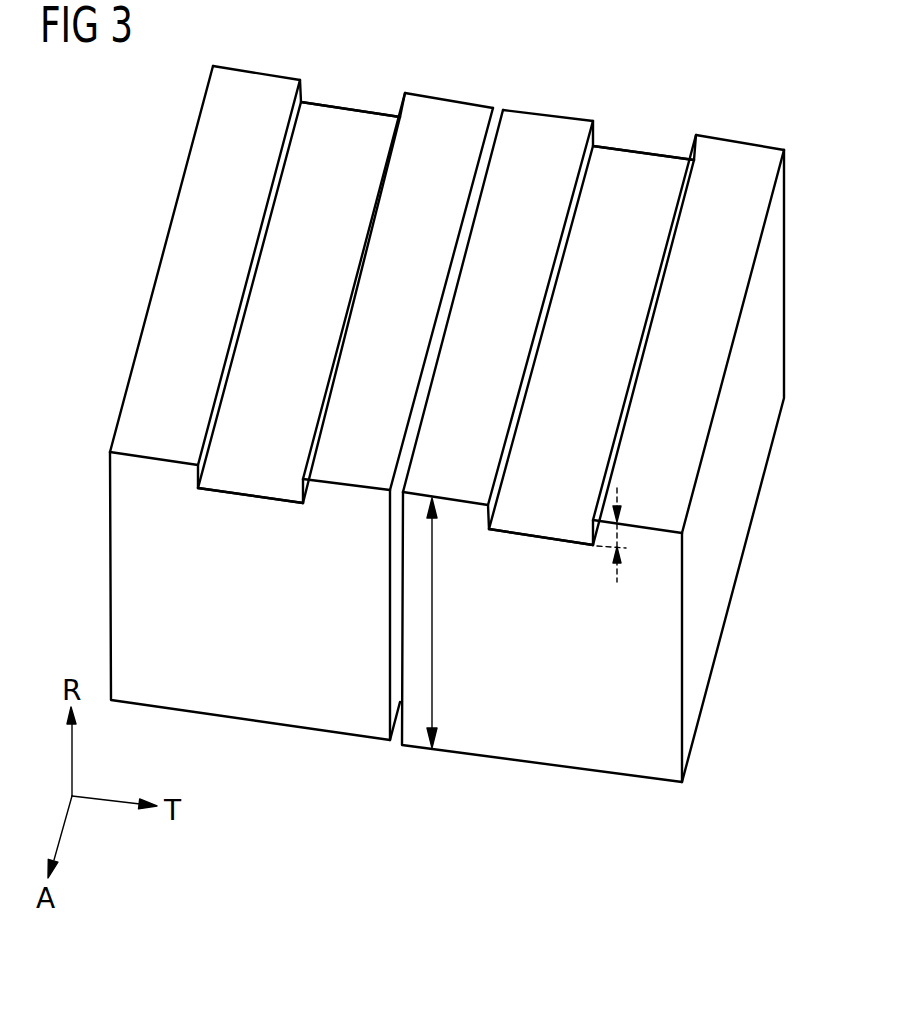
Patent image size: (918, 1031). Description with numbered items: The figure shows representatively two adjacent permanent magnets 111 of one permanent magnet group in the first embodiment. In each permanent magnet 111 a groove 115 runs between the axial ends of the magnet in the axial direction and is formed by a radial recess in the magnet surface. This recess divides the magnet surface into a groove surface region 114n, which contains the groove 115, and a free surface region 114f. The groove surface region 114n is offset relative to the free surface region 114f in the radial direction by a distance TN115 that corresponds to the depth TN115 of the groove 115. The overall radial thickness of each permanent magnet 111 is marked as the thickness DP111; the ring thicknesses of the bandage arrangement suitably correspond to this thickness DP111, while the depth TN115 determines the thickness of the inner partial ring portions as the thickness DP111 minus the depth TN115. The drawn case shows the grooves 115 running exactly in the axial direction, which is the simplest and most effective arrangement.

The permanent magnet 111 is at (597, 102).
The groove surface region 114n is at (338, 122).
The free surface region 114f is at (355, 333).
The groove 115 is at (245, 484).
The thickness of the magnet DP111 is at (491, 623).
The depth of the groove TN115 is at (615, 535).